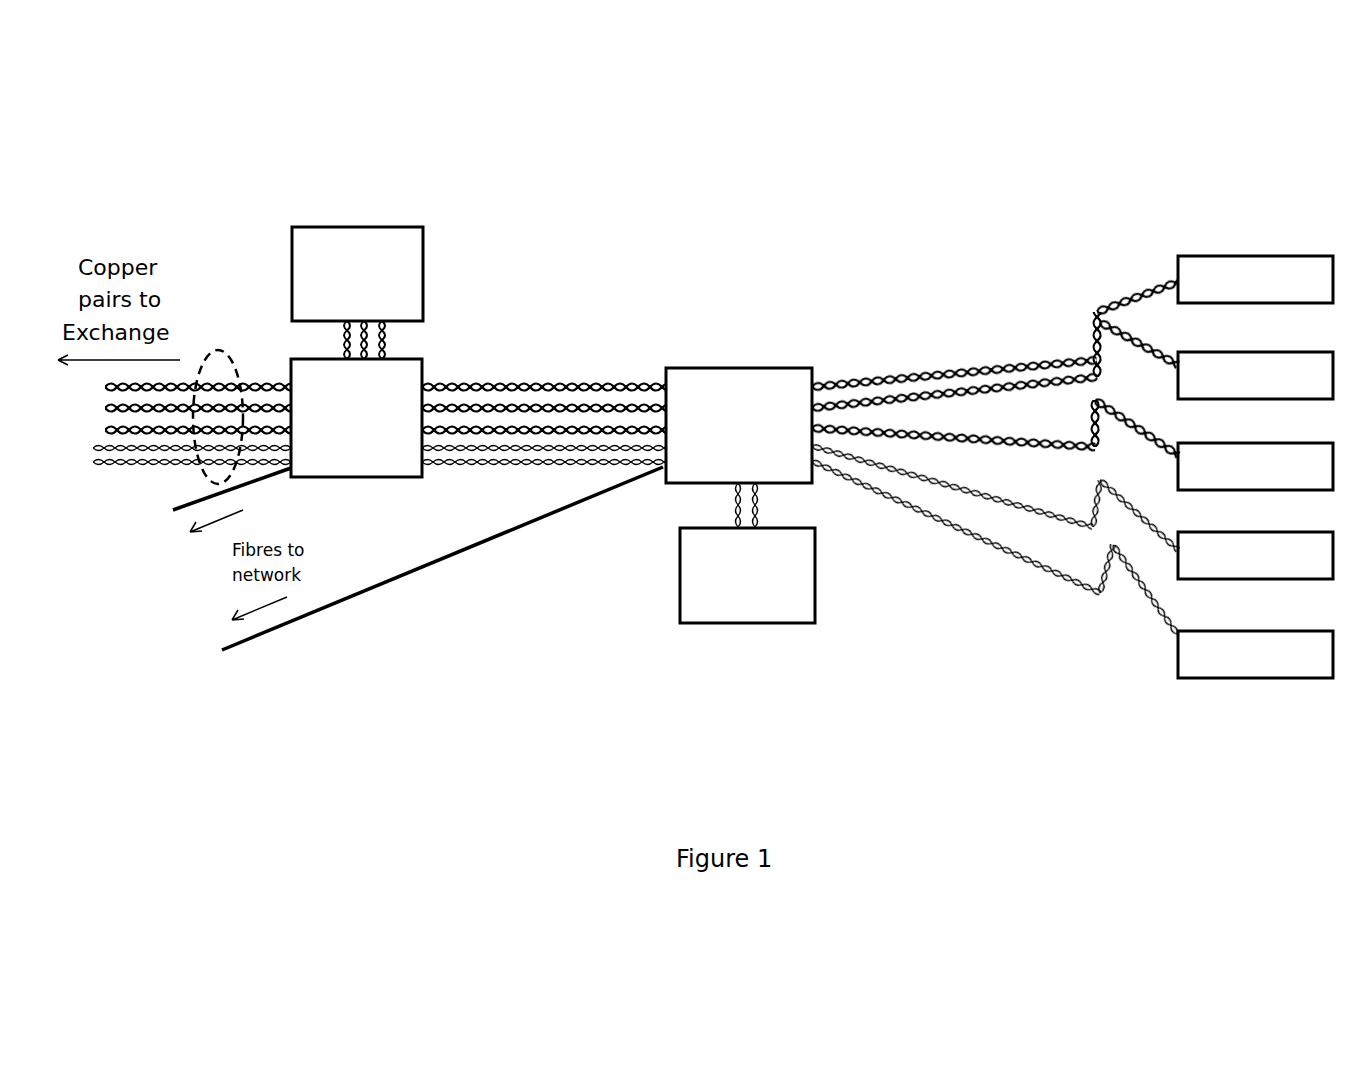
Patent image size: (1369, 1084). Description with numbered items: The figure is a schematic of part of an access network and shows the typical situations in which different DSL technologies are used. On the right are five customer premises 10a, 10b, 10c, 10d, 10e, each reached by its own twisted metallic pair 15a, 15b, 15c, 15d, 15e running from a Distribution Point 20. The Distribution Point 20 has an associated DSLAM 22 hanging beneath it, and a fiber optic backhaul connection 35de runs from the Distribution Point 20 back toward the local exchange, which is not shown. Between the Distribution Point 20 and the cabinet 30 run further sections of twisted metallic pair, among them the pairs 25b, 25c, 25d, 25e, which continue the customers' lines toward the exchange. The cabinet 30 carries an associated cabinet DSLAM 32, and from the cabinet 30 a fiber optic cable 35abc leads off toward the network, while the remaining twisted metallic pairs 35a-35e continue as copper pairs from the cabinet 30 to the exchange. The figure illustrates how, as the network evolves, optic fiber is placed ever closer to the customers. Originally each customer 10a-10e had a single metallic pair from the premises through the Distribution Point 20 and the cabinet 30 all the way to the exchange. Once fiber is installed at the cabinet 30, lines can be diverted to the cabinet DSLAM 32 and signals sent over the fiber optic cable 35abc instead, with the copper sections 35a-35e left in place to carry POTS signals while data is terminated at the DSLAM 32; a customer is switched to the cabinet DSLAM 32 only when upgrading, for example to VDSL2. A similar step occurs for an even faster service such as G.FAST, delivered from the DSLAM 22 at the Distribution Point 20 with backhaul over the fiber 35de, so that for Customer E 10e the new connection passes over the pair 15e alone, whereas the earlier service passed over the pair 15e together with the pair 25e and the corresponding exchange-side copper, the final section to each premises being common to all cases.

The customer premises 10a is at (1273, 253).
The customer premises 10b is at (1273, 350).
The customer premises 10c is at (1273, 441).
The customer premises 10d is at (1273, 530).
The customer premises 10e is at (1273, 629).
The twisted metallic pair 15a is at (860, 372).
The twisted metallic pair 15b is at (893, 390).
The twisted metallic pair 15c is at (932, 427).
The twisted metallic pair 15d is at (1027, 507).
The twisted metallic pair 15e is at (1093, 593).
The distribution point 20 is at (783, 367).
The DSLAM 22 is at (743, 623).
The twisted metallic pair 25b is at (583, 380).
The twisted metallic pair 25c is at (645, 428).
The twisted metallic pair 25d is at (518, 450).
The twisted metallic pair 25e is at (467, 460).
The cabinet 30 is at (422, 363).
The cabinet DSLAM 32 is at (423, 270).
The twisted metallic pairs 35a-35e is at (217, 347).
The fiber optic cable 35abc is at (178, 512).
The fiber optic backhaul connection 35de is at (292, 622).